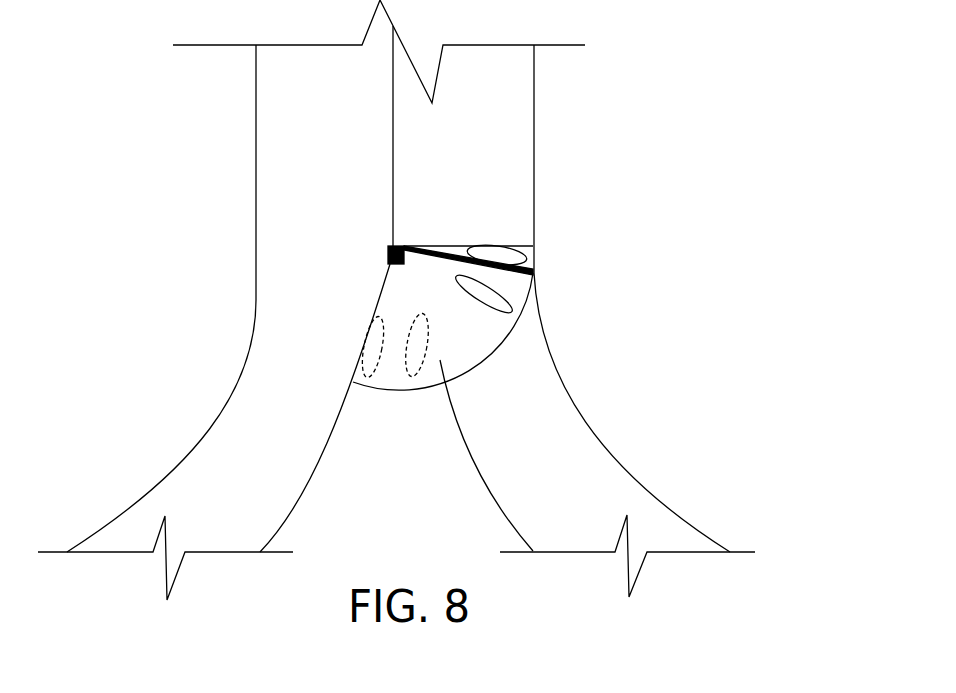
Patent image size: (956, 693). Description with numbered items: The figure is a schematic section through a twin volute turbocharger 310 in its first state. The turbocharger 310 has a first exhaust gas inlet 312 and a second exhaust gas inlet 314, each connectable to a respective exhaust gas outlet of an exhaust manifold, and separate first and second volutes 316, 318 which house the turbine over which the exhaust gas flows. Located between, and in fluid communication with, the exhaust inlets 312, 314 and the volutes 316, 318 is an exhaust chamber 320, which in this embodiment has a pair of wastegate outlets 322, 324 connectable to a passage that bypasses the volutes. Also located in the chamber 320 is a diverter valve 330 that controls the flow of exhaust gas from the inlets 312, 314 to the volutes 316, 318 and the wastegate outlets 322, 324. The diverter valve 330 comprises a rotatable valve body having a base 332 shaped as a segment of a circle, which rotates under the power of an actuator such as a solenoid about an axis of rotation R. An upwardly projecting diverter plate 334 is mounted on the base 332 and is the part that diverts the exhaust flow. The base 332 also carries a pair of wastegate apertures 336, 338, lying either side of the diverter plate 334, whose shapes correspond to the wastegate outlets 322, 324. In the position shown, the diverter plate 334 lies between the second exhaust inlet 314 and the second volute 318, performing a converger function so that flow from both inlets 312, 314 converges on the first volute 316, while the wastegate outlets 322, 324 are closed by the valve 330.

The turbocharger 310 is at (95, 160).
The first exhaust gas inlet 312 is at (205, 490).
The second exhaust gas inlet 314 is at (587, 493).
The first volute 316 is at (295, 148).
The second volute 318 is at (496, 139).
The exhaust chamber 320 is at (265, 333).
The wastegate outlet 322 is at (362, 355).
The wastegate outlet 324 is at (492, 305).
The diverter valve 330 is at (565, 278).
The base 332 is at (441, 368).
The diverter plate 334 is at (508, 270).
The wastegate aperture 336 is at (412, 342).
The wastegate aperture 338 is at (532, 252).
The axis of rotation R is at (397, 246).